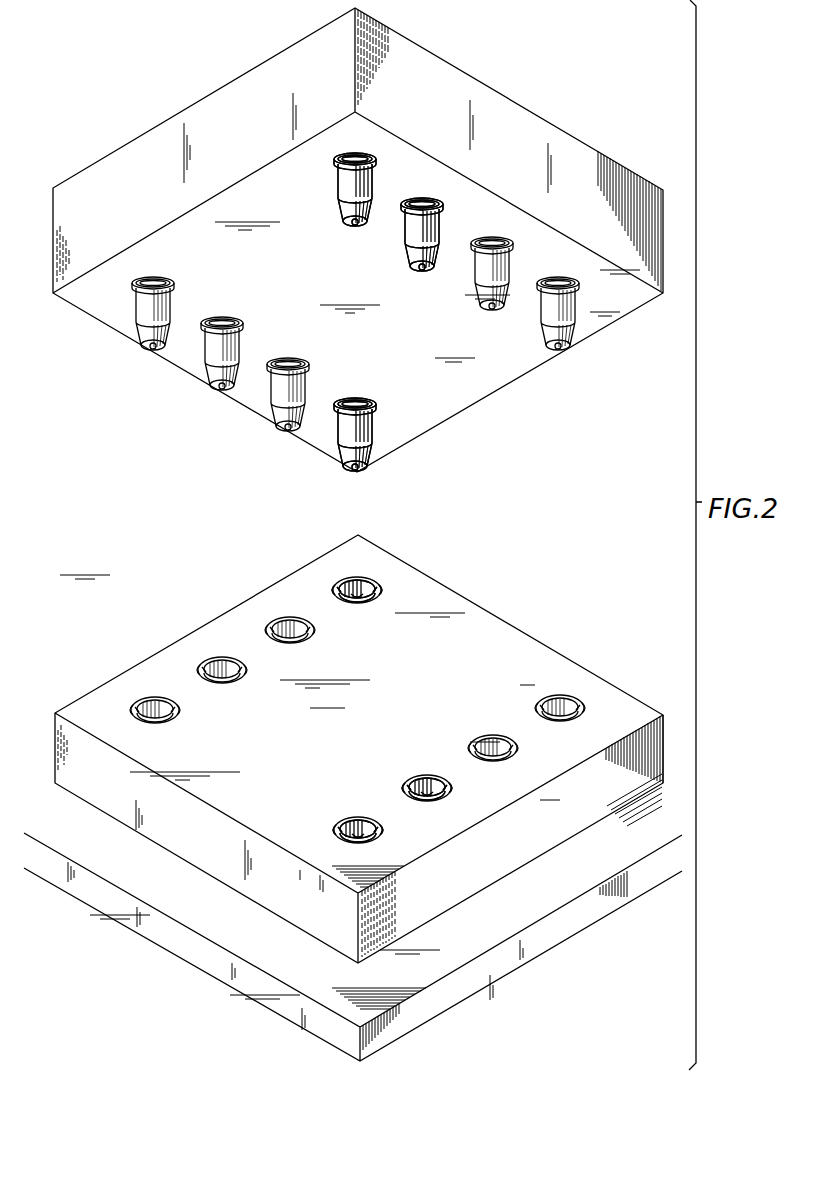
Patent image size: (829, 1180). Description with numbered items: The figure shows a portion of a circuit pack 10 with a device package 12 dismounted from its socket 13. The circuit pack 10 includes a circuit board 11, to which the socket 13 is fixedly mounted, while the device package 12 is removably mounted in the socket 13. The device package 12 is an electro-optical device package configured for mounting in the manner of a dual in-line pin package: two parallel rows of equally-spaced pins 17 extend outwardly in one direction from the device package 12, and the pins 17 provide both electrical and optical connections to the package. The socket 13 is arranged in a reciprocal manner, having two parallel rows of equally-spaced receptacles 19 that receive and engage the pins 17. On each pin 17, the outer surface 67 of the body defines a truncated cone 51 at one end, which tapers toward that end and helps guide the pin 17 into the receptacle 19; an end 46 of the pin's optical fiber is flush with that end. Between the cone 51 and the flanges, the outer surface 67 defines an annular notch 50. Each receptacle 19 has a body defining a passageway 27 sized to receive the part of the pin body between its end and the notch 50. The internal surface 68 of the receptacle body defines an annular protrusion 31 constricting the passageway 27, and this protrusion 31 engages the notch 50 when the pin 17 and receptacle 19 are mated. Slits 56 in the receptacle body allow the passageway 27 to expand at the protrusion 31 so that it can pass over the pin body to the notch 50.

The circuit pack 10 is at (142, 506).
The circuit board 11 is at (540, 947).
The device package 12 is at (512, 113).
The socket 13 is at (480, 617).
The pins 17 is at (340, 185).
The receptacles 19 is at (150, 690).
The passageway 27 is at (373, 828).
The annular protrusion 31 is at (360, 580).
The end of optical fiber 46 is at (355, 230).
The annular notch 50 is at (374, 160).
The truncated cone 51 is at (342, 218).
The slits 56 is at (380, 578).
The outer surface 67 is at (370, 182).
The internal surface 68 is at (375, 598).